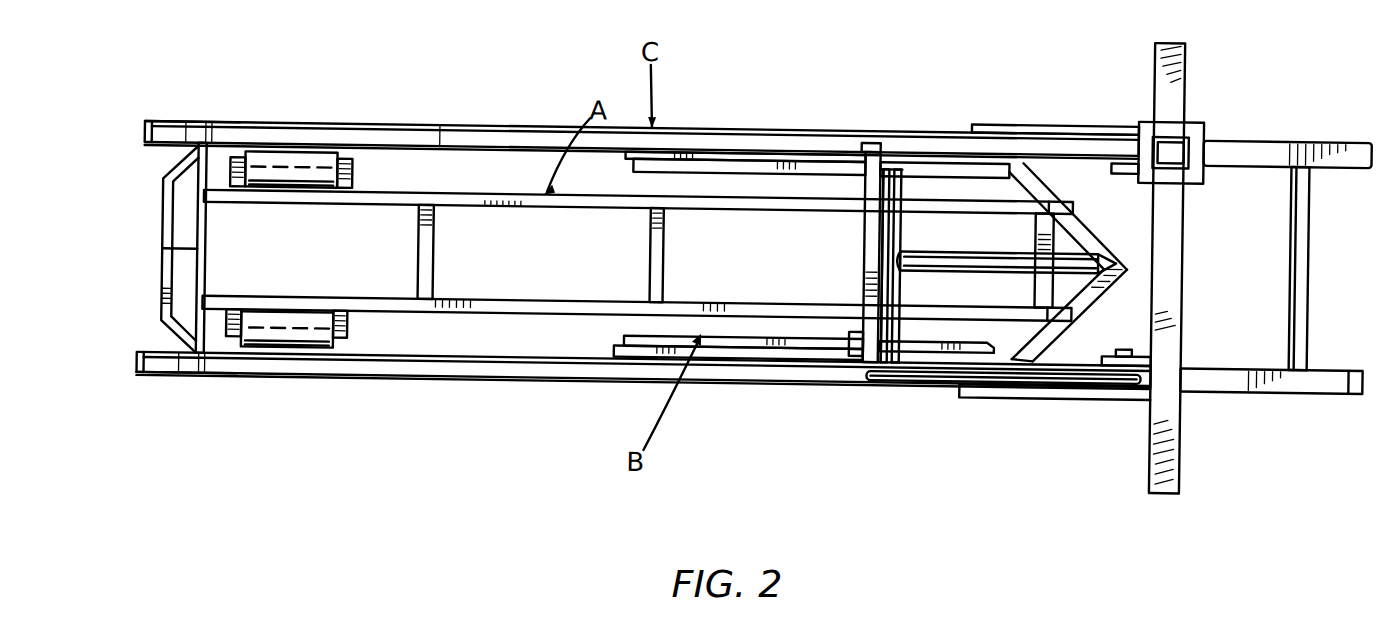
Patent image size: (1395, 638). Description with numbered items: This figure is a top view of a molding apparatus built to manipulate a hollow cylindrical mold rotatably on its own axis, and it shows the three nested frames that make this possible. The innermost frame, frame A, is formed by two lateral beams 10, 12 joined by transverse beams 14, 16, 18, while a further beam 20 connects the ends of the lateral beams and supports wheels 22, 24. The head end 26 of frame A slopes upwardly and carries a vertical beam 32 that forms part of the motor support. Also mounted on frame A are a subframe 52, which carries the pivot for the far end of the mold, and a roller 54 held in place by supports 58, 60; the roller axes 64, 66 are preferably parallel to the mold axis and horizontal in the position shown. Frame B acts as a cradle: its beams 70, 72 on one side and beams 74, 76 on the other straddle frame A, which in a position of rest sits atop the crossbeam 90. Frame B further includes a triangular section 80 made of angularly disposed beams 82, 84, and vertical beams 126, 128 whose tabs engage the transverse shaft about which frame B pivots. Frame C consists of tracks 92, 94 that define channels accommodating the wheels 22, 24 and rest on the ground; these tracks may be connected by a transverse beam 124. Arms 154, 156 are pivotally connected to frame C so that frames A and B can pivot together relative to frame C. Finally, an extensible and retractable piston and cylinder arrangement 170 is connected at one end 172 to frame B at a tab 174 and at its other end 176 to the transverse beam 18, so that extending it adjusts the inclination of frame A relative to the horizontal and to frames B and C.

The lateral beam 10 is at (486, 189).
The lateral beam 12 is at (529, 293).
The transverse beam 14 is at (436, 252).
The transverse beam 16 is at (667, 258).
The transverse beam 18 is at (895, 269).
The beam 20 is at (207, 246).
The wheel 22 is at (190, 122).
The wheel 24 is at (193, 376).
The head end of frame A 26 is at (1015, 353).
The vertical beam 32 is at (863, 314).
The subframe 52 is at (164, 248).
The roller 54 is at (334, 157).
The support 58 is at (242, 157).
The support 60 is at (353, 326).
The axis of roller 64 is at (293, 164).
The axis of roller 66 is at (271, 347).
The beam 70 is at (745, 329).
The beam 72 is at (723, 349).
The beam 74 is at (765, 158).
The beam 76 is at (721, 147).
The triangular section 80 is at (1132, 244).
The angularly disposed beam 82 is at (1062, 322).
The angularly disposed beam 84 is at (1097, 219).
The crossbeam 90 is at (866, 251).
The track 92 is at (440, 122).
The track 94 is at (462, 353).
The transverse beam 124 is at (1313, 264).
The vertical beam 126 is at (872, 345).
The vertical beam 128 is at (873, 140).
The arm 154 is at (944, 370).
The arm 156 is at (1012, 133).
The piston and cylinder arrangement 170 is at (967, 260).
The end of extensible member 172 is at (1142, 248).
The tab 174 is at (1133, 266).
The end of extensible member 176 is at (907, 240).